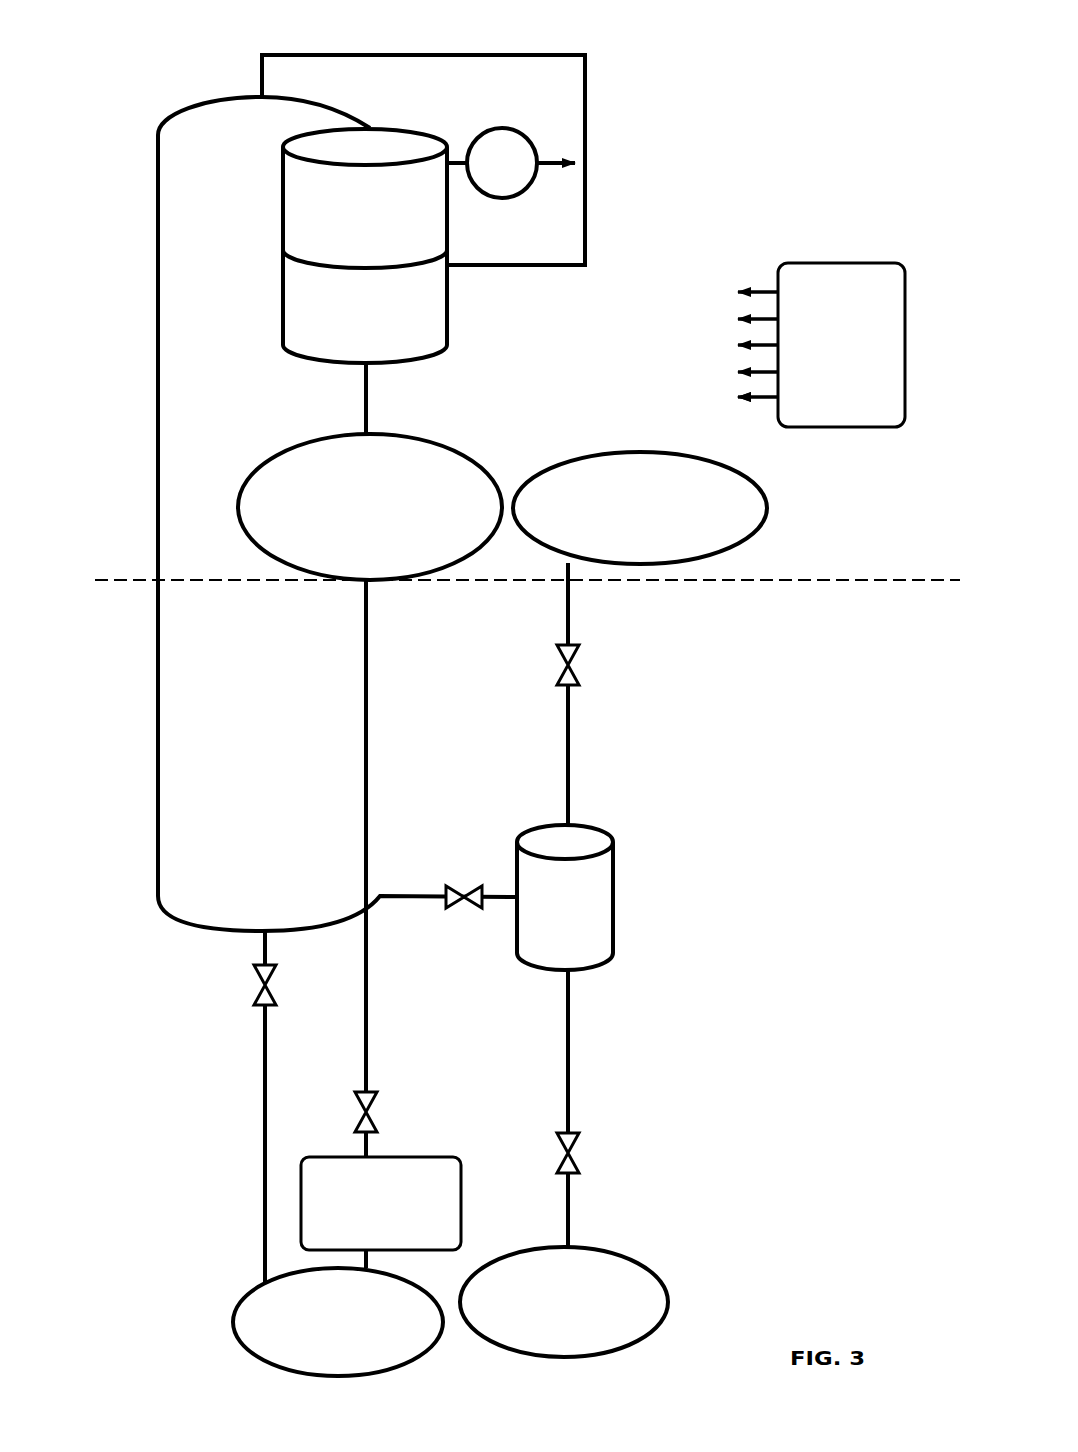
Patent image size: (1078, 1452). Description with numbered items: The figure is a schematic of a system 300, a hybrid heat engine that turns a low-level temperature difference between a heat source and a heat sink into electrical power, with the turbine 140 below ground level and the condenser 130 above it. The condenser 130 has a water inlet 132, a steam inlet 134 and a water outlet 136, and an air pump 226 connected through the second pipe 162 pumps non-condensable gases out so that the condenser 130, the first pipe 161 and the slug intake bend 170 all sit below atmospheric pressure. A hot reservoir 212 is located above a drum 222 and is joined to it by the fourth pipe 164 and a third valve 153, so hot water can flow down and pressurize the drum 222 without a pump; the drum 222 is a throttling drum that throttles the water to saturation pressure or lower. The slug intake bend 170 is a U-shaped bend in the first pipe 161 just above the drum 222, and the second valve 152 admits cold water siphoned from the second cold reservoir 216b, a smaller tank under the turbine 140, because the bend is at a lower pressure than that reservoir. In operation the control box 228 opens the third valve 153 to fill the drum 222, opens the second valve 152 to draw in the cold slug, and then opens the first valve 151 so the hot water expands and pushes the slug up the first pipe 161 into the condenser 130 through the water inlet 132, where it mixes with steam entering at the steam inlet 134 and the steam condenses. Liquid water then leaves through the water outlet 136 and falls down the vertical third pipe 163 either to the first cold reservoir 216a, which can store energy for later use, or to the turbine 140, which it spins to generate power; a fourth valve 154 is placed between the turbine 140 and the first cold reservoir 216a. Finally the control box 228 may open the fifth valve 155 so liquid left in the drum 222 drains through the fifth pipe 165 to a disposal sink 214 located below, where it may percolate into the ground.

The system 300 is at (174, 55).
The first pipe 161 is at (182, 110).
The second pipe 162 is at (588, 57).
The third pipe 163 is at (368, 417).
The fourth pipe 164 is at (572, 777).
The fifth pipe 165 is at (572, 1010).
The condenser 130 is at (365, 246).
The water inlet 132 is at (390, 126).
The steam inlet 134 is at (462, 272).
The water outlet 136 is at (383, 378).
The turbine 140 is at (381, 1203).
The first valve 151 is at (464, 883).
The second valve 152 is at (253, 985).
The third valve 153 is at (582, 665).
The fourth valve 154 is at (380, 1112).
The fifth valve 155 is at (582, 1153).
The slug intake bend 170 is at (258, 910).
The hot reservoir 212 is at (640, 508).
The disposal sink 214 is at (564, 1302).
The first cold reservoir 216a is at (370, 507).
The second cold reservoir 216b is at (338, 1322).
The drum 222 is at (565, 897).
The air pump 226 is at (511, 194).
The control box 228 is at (806, 345).